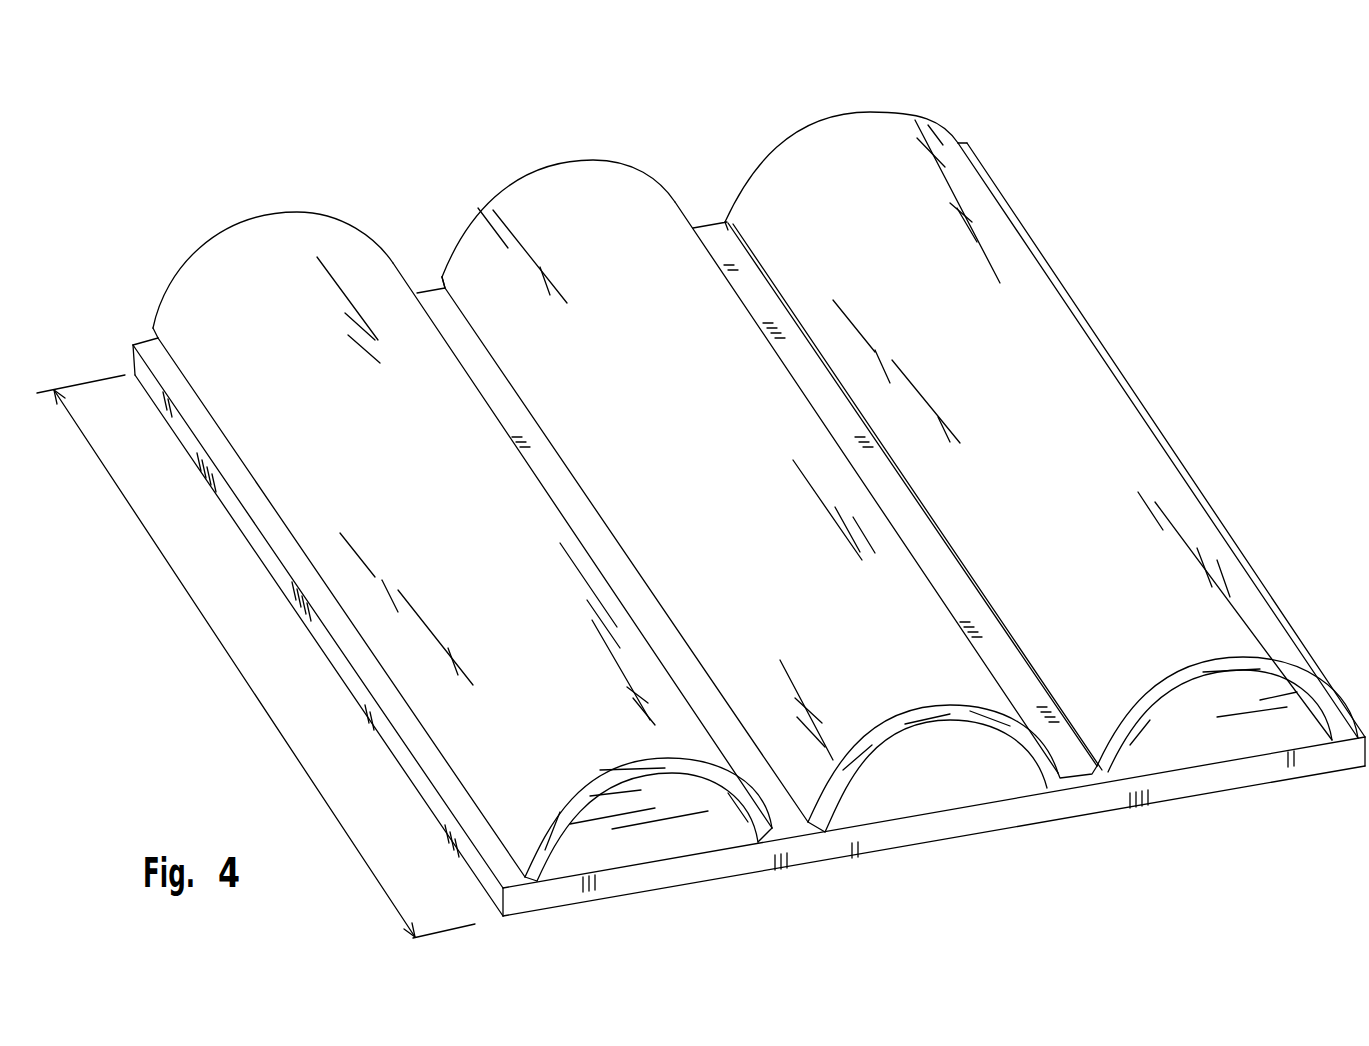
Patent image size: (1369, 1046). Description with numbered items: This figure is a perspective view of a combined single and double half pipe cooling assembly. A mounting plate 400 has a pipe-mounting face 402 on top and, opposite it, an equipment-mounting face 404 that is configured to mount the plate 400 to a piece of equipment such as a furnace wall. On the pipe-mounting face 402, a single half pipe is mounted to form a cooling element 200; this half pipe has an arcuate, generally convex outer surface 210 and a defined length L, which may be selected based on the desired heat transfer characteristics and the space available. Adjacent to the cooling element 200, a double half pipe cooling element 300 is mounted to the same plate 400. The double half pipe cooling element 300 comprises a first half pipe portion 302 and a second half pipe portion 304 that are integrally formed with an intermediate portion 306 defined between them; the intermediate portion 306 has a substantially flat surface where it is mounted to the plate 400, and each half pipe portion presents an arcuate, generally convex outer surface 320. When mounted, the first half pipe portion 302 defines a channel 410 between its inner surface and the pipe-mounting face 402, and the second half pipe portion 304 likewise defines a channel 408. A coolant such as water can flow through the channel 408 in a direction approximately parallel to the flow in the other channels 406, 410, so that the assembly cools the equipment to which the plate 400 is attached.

The cooling element 200 is at (462, 454).
The outer surface 210 is at (321, 587).
The double half pipe cooling element 300 is at (690, 484).
The first half pipe portion 302 is at (1161, 440).
The second half pipe portion 304 is at (436, 214).
The intermediate portion 306 is at (1090, 813).
The outer surface 320 is at (887, 429).
The mounting plate 400 is at (934, 826).
The pipe-mounting face 402 is at (329, 613).
The equipment-mounting face 404 is at (934, 854).
The channel 406 is at (648, 864).
The channel 408 is at (933, 806).
The channel 410 is at (1227, 761).
The length L is at (256, 656).